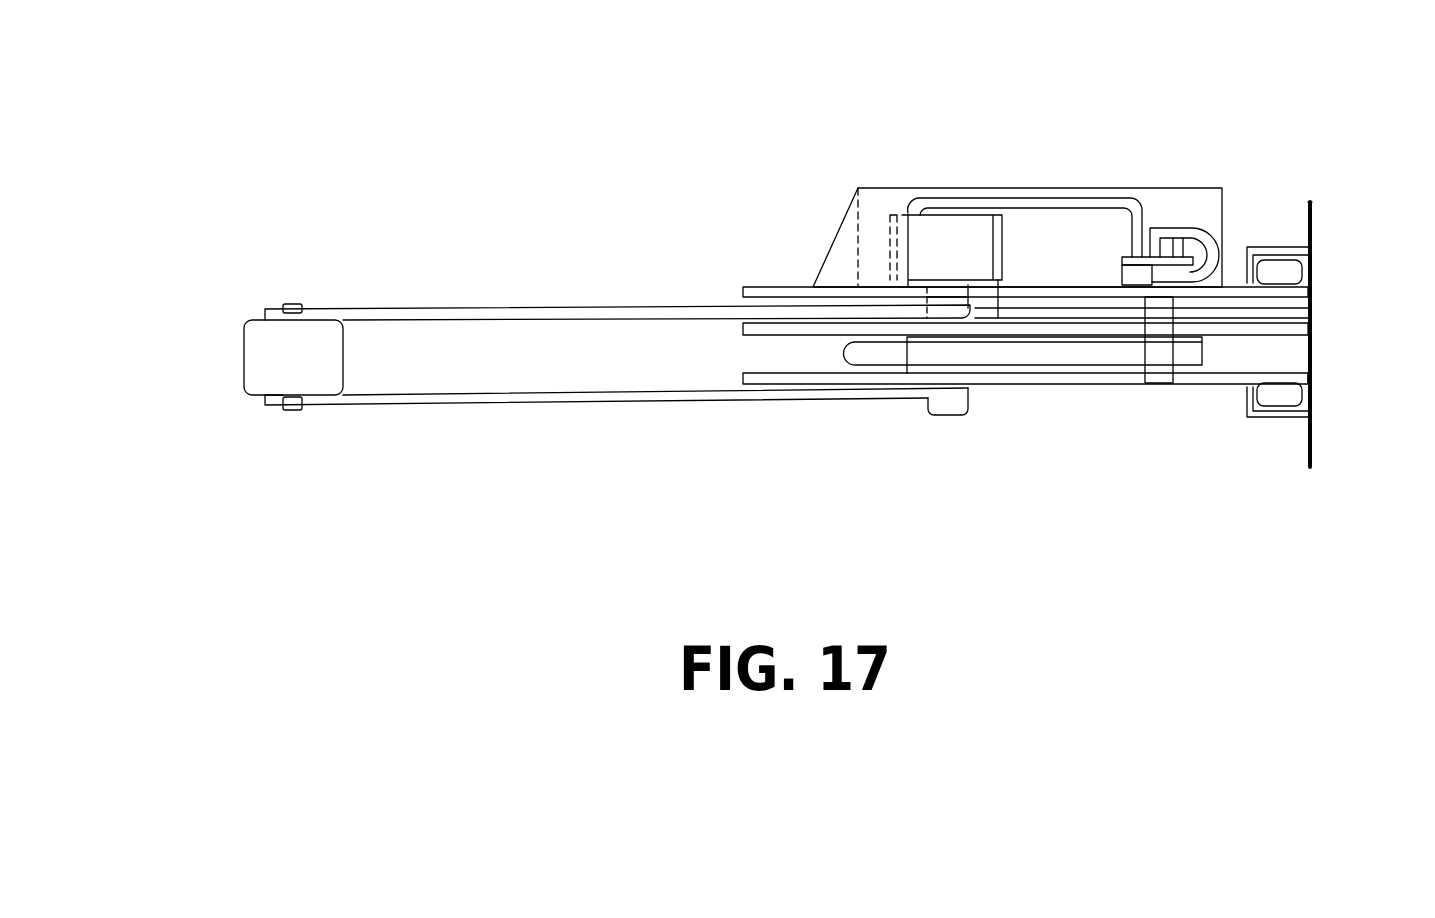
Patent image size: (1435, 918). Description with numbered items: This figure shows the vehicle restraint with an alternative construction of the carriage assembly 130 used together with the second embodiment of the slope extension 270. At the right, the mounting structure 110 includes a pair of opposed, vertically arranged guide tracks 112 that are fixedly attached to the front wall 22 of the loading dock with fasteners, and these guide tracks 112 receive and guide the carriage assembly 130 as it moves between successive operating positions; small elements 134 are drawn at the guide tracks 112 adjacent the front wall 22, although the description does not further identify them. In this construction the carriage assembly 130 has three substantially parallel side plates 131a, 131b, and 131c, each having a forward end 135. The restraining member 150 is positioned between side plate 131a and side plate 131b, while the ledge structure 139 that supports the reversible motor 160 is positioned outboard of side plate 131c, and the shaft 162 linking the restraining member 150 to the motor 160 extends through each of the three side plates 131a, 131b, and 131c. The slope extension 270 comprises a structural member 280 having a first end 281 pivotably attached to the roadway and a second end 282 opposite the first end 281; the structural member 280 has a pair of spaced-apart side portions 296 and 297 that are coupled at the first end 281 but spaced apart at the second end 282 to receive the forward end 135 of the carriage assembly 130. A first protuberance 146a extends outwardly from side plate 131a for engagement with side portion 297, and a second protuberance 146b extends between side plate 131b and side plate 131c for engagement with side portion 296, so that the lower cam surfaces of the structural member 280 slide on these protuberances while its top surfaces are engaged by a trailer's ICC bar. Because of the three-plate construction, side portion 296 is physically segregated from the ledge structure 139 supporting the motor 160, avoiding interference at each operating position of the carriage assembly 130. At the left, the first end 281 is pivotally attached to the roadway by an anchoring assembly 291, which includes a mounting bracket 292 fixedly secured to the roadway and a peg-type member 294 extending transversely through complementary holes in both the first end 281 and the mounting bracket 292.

The front wall 22 is at (1307, 218).
The mounting structure 110 is at (1273, 448).
The guide tracks 112 is at (1245, 247).
The carriage assembly 130 is at (1155, 418).
The side plate 131a is at (1015, 385).
The side plate 131b is at (987, 318).
The side plate 131c is at (1047, 287).
The clip 134 is at (1285, 275).
The forward end 135 is at (743, 328).
The ledge structure 139 is at (1182, 187).
The first protuberance 146a is at (927, 413).
The second protuberance 146b is at (1000, 280).
The restraining member 150 is at (855, 352).
The reversible motor 160 is at (962, 213).
The shaft 162 is at (1177, 311).
The slope extension 270 is at (518, 276).
The structural member 280 is at (505, 402).
The first end 281 is at (330, 308).
The second end 282 is at (942, 303).
The anchoring assembly 291 is at (242, 302).
The mounting bracket 292 is at (270, 400).
The peg-type member 294 is at (292, 410).
The side portion 296 is at (568, 308).
The side portion 297 is at (748, 402).